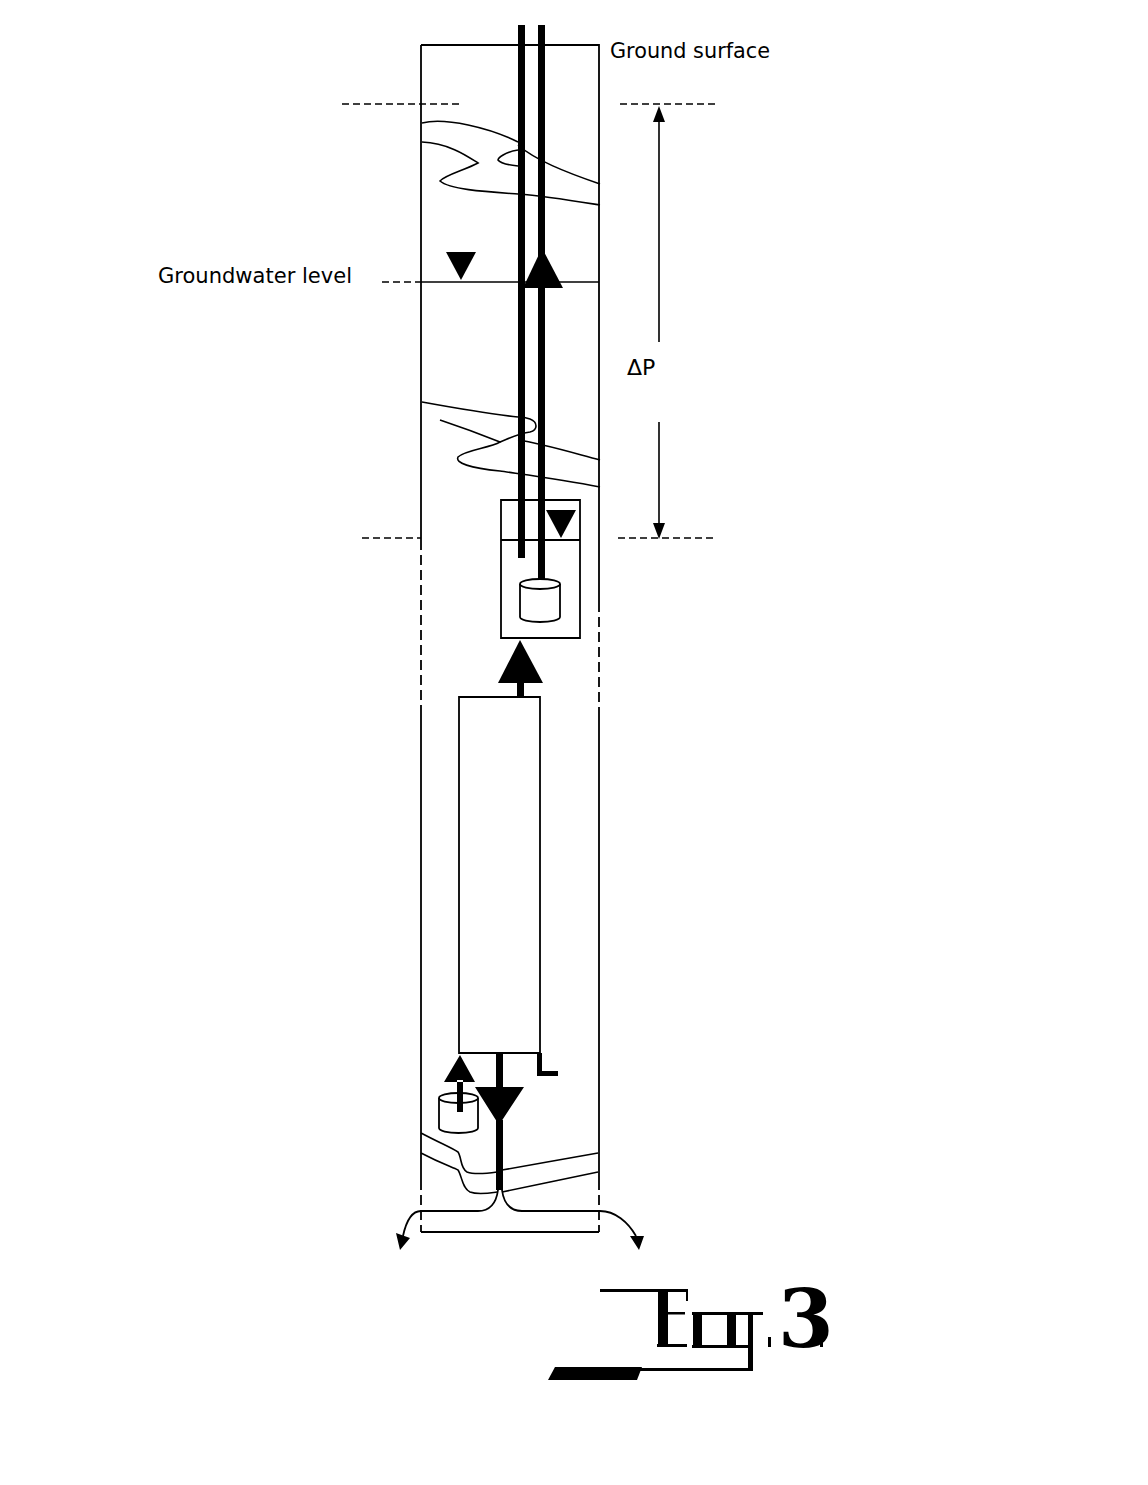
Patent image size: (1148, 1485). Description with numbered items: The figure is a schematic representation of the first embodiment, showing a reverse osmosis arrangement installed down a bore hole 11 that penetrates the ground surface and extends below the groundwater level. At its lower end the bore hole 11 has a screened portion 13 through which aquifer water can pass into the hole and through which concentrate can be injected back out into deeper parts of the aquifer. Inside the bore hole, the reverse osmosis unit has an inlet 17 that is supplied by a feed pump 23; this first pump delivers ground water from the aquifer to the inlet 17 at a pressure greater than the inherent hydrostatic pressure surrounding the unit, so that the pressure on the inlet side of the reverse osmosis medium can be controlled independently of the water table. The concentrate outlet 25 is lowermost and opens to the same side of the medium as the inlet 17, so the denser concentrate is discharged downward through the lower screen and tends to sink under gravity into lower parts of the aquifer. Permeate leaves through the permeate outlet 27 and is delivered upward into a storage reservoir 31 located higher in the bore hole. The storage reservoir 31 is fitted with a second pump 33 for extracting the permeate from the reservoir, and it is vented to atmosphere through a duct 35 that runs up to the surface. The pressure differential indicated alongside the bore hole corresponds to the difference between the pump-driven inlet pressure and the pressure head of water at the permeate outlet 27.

The bore hole 11 is at (421, 384).
The screened portion 13 is at (599, 658).
The inlet 17 is at (457, 1054).
The feed pump 23 is at (438, 1111).
The concentrate outlet 25 is at (513, 1053).
The permeate outlet 27 is at (545, 672).
The storage reservoir 31 is at (581, 561).
The second pump 33 is at (540, 604).
The duct 35 is at (518, 309).